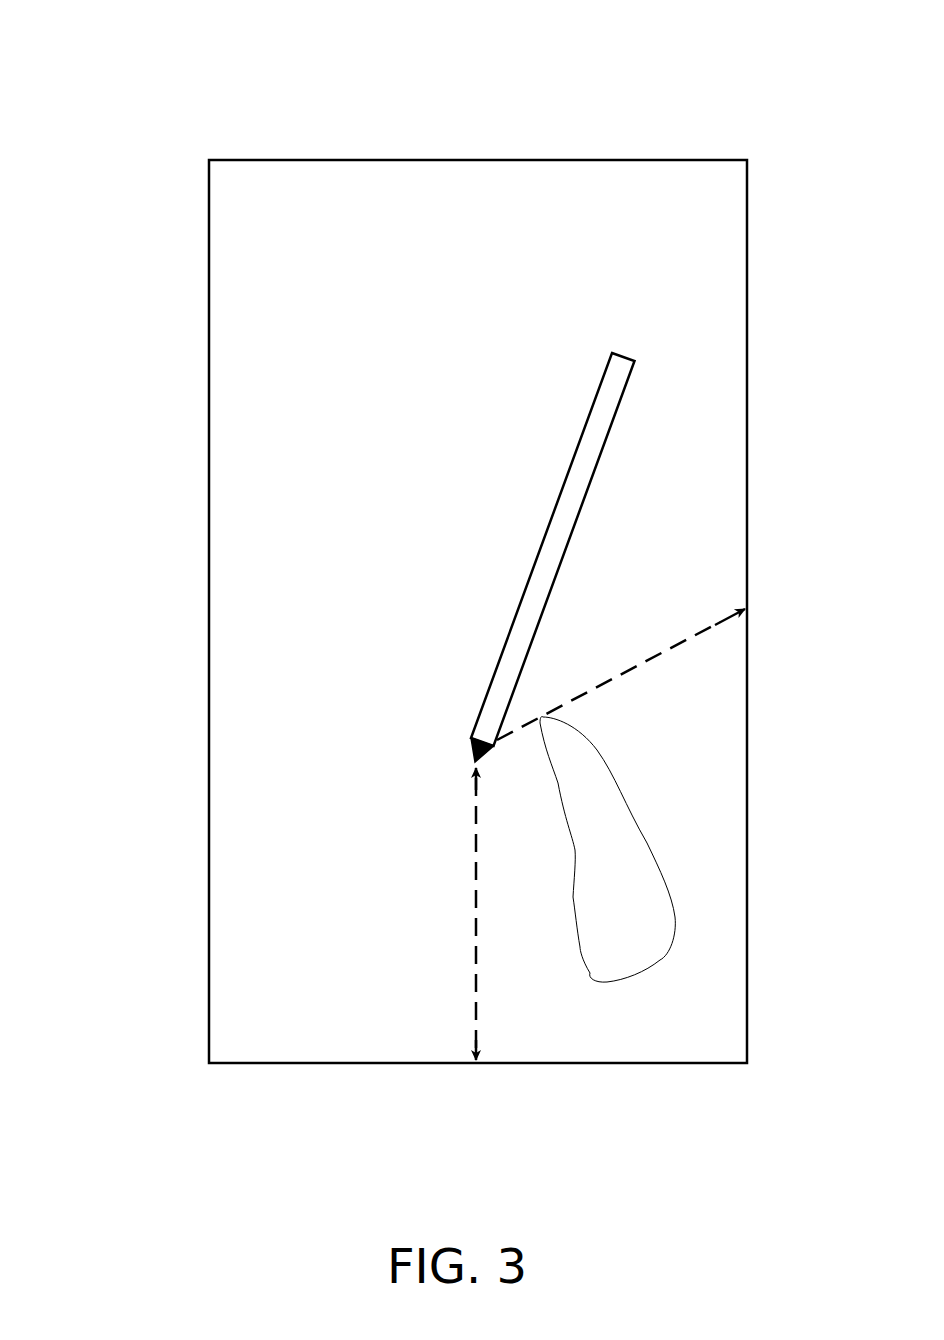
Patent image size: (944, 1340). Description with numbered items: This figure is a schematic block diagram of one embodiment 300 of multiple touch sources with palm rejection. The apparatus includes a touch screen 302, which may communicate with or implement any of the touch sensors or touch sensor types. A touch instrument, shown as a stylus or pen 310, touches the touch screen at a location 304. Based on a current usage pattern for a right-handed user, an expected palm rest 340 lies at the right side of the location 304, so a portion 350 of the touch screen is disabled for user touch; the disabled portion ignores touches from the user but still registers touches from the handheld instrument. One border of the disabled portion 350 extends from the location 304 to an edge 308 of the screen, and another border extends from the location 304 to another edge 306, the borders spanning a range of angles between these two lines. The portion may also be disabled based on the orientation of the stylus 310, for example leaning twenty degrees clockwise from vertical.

The embodiment of multiple touch sources with palm rejection 300 is at (128, 34).
The touch screen 302 is at (676, 164).
The location 304 is at (467, 755).
The edge 306 is at (473, 1054).
The edge 308 is at (750, 604).
The stylus 310 is at (537, 551).
The expected palm rest 340 is at (660, 827).
The disabled portion 350 is at (695, 1009).